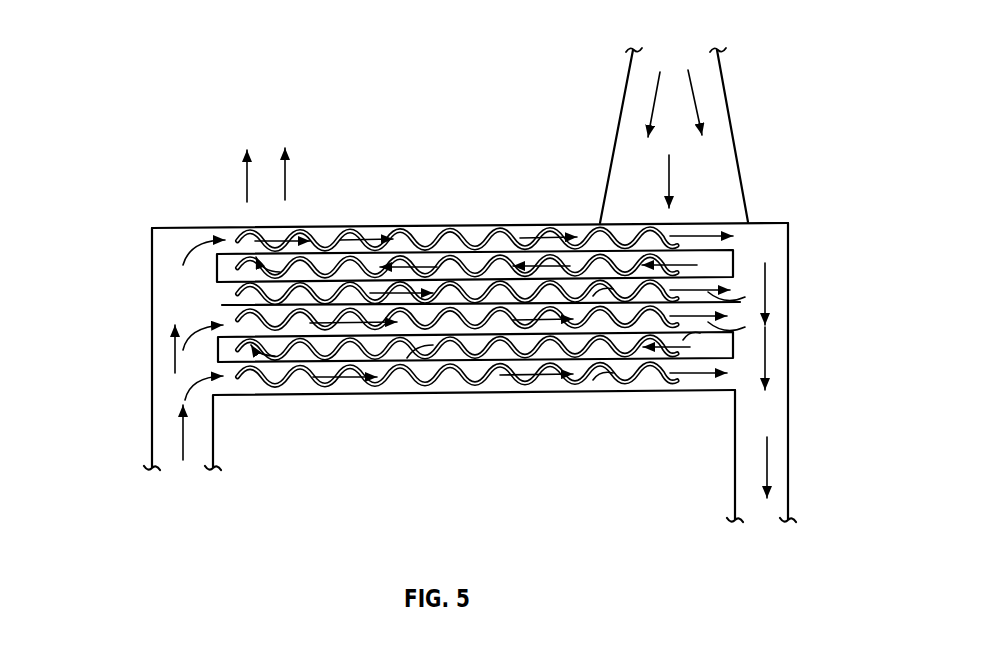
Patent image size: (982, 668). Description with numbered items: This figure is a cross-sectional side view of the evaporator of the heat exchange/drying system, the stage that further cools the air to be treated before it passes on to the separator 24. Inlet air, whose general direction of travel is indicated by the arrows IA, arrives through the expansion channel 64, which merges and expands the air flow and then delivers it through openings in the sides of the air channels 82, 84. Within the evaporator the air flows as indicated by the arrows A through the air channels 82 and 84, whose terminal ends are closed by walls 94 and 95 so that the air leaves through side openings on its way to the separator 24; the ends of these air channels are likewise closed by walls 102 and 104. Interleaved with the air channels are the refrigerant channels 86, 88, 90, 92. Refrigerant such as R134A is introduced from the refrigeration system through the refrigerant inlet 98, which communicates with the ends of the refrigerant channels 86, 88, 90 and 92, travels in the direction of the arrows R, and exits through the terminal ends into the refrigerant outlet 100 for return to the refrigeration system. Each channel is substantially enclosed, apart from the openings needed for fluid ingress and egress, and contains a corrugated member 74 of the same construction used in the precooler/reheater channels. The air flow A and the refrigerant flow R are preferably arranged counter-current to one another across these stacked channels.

The separator 24 is at (472, 200).
The expansion channel 64 is at (737, 153).
The corrugated member 74 is at (218, 282).
The air channel 82 is at (740, 250).
The air channel 84 is at (733, 343).
The refrigerant channel 86 is at (495, 227).
The refrigerant channel 88 is at (223, 297).
The refrigerant channel 90 is at (217, 308).
The refrigerant channel 92 is at (218, 355).
The wall 94 is at (205, 255).
The wall 95 is at (217, 368).
The refrigerant inlet 98 is at (217, 433).
The refrigerant outlet 100 is at (735, 471).
The wall 102 is at (733, 262).
The wall 104 is at (733, 348).
The inlet air IA is at (695, 98).
The air flow arrows A is at (285, 187).
The refrigerant flow arrows R is at (225, 296).